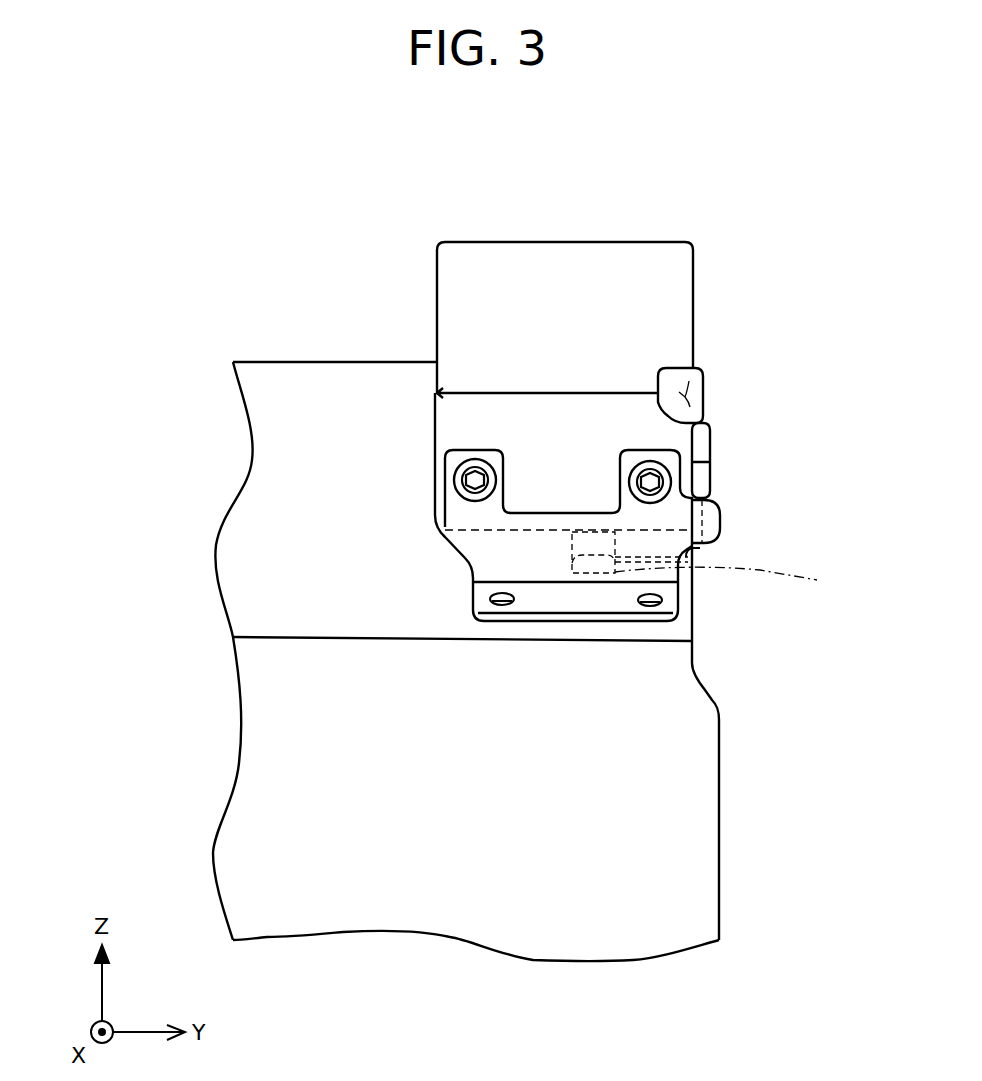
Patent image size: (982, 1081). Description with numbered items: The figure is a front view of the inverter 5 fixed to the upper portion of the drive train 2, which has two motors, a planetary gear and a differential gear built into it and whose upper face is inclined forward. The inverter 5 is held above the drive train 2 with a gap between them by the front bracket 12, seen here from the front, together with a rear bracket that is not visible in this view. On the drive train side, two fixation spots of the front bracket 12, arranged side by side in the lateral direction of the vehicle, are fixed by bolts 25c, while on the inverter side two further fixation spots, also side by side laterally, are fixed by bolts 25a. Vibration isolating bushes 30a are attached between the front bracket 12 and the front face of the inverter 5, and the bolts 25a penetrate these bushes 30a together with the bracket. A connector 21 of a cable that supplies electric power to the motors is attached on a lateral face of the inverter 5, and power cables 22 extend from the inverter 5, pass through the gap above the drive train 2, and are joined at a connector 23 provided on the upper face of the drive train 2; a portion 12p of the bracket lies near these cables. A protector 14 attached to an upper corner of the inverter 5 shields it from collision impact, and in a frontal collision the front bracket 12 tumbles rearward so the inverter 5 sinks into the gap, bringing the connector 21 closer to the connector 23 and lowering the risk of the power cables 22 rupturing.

The drive train 2 is at (693, 812).
The inverter 5 is at (522, 275).
The protector 14 is at (688, 379).
The connector 21 is at (697, 455).
The projection of bracket 12p is at (710, 512).
The front bracket 12 is at (487, 551).
The power cables 22 is at (697, 549).
The connector 23 is at (734, 579).
The bolts 25a is at (650, 482).
The vibration isolating bushes 30a is at (629, 487).
The bolts 25c is at (500, 597).